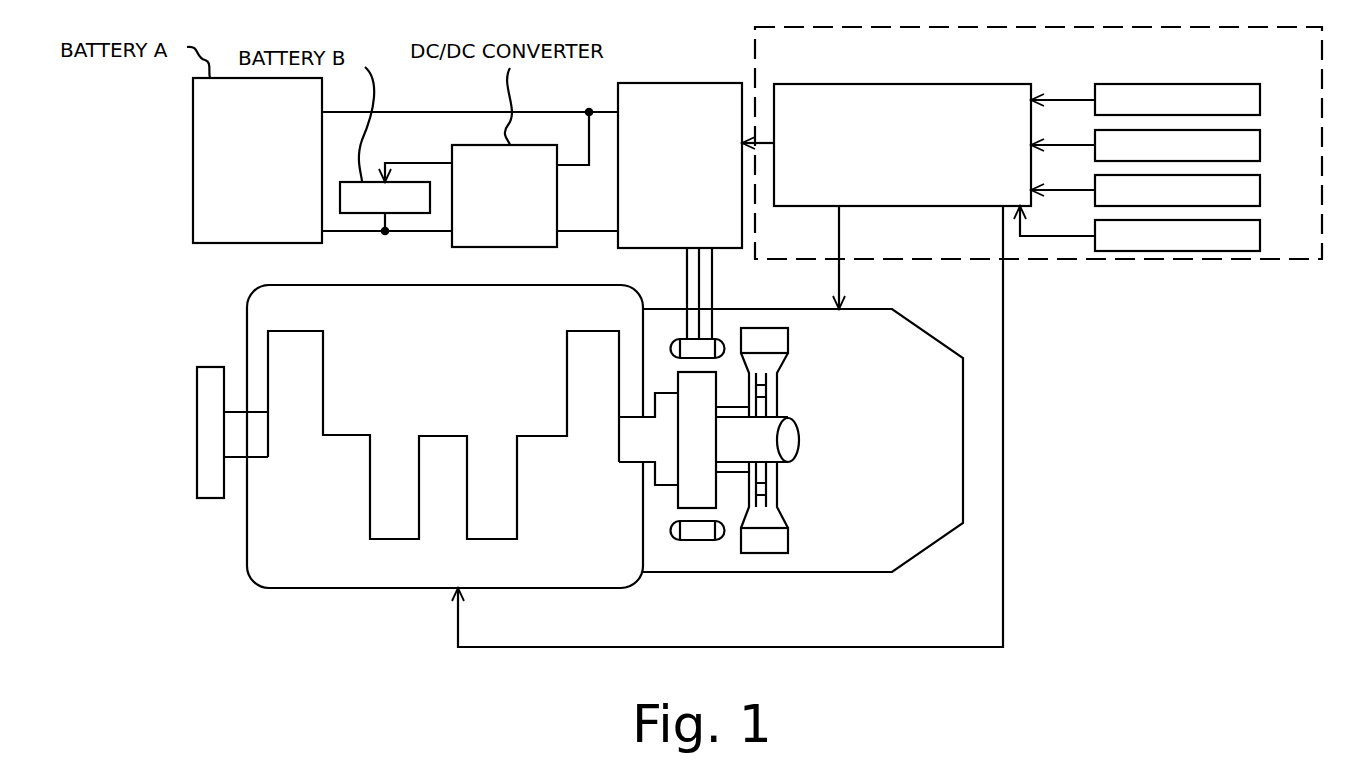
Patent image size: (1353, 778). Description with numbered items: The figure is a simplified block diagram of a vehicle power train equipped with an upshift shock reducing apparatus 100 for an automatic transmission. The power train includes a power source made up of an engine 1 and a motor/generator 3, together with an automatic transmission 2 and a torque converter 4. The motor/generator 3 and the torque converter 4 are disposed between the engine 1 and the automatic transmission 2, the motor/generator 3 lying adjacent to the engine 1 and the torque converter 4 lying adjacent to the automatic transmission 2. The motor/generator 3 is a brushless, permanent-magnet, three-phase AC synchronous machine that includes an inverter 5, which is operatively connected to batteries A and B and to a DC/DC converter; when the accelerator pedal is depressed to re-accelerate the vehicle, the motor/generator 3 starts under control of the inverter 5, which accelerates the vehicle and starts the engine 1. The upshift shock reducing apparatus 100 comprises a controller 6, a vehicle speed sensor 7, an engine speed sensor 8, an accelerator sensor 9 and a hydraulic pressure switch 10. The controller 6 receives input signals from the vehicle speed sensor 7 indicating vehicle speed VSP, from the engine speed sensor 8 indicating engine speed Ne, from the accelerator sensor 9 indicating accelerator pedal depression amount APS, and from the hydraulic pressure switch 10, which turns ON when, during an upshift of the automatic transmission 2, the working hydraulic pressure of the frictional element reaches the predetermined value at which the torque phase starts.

The engine 1 is at (245, 534).
The automatic transmission 2 is at (966, 477).
The motor/generator 3 is at (718, 336).
The torque converter 4 is at (767, 545).
The inverter 5 is at (658, 83).
The controller 6 is at (857, 84).
The vehicle speed sensor 7 is at (1260, 100).
The engine speed sensor 8 is at (1260, 145).
The accelerator sensor 9 is at (1260, 190).
The hydraulic pressure switch 10 is at (1260, 236).
The upshift shock reducing apparatus 100 is at (1236, 264).